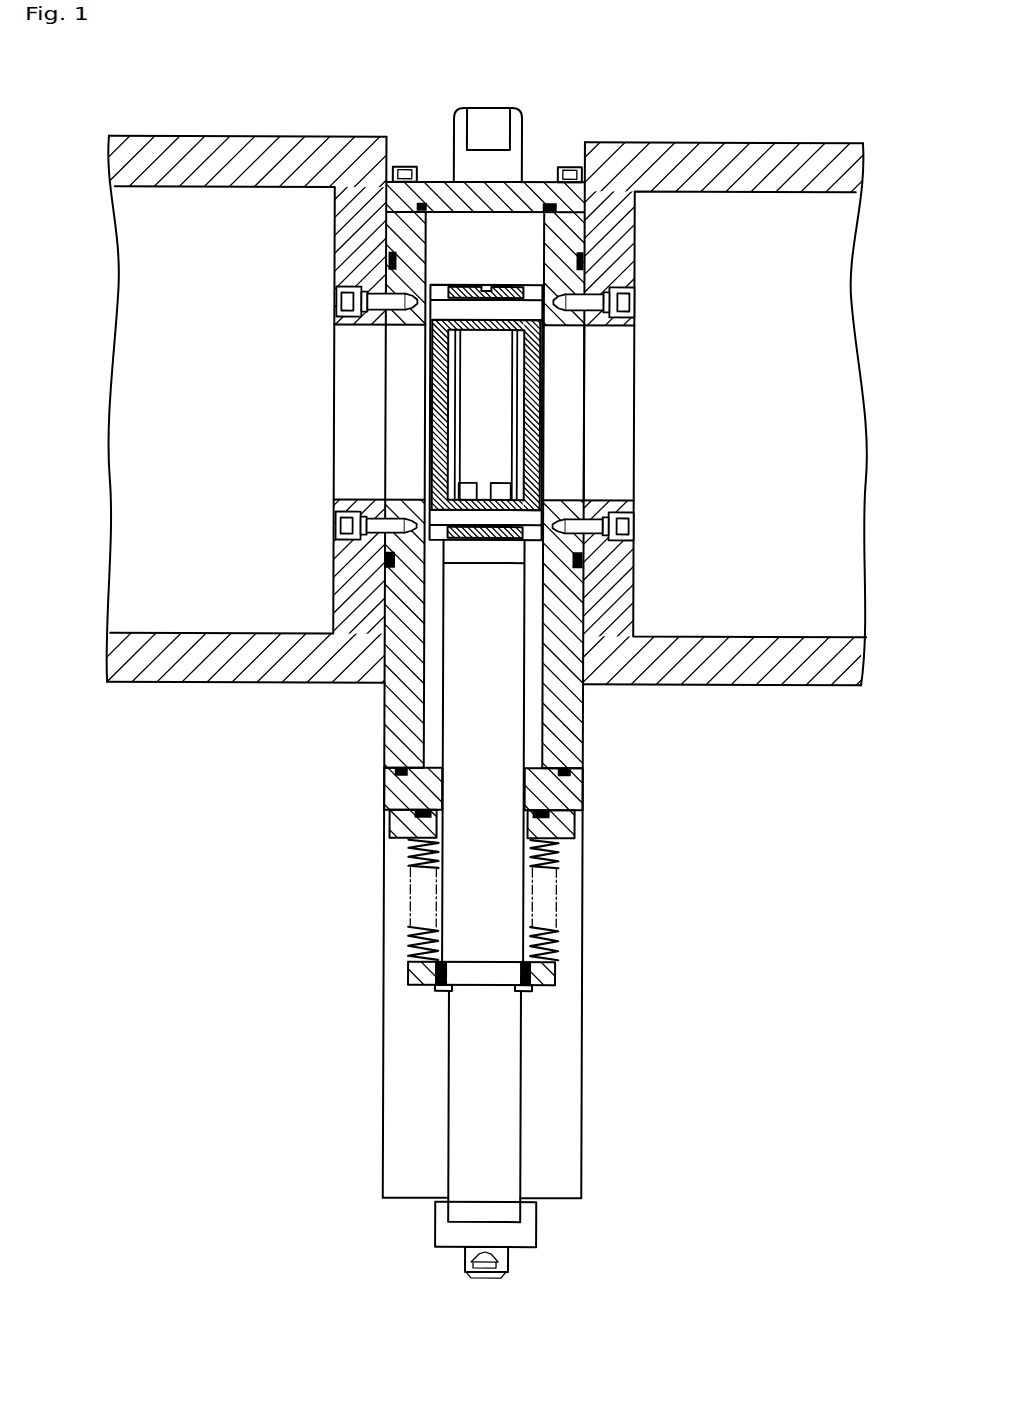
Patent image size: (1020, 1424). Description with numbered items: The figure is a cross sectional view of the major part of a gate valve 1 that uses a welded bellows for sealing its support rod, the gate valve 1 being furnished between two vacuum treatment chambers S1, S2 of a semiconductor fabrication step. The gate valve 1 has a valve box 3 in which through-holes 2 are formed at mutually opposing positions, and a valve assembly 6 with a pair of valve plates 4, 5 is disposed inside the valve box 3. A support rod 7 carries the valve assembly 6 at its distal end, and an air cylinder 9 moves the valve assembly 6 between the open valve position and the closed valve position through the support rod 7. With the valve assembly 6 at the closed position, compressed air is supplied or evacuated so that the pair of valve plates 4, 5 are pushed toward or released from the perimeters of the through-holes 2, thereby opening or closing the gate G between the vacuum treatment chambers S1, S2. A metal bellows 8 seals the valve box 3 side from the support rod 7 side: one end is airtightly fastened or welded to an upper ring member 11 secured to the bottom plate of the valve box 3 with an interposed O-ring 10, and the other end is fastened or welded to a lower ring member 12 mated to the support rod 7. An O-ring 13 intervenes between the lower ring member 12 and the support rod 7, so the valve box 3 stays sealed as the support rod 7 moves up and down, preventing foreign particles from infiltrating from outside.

The gate valve 1 is at (338, 860).
The through-holes 2 is at (420, 520).
The valve box 3 is at (363, 697).
The valve plate 4 is at (432, 372).
The valve plate 5 is at (541, 373).
The valve assembly 6 is at (517, 424).
The support rod 7 is at (472, 1073).
The bellows 8 is at (553, 927).
The air cylinder 9 is at (573, 1127).
The O-ring 10 is at (422, 813).
The upper ring member 11 is at (567, 852).
The lower ring member 12 is at (557, 978).
The O-ring 13 is at (506, 983).
The gate G is at (613, 341).
The vacuum treatment chamber S1 is at (227, 261).
The vacuum treatment chamber S2 is at (795, 267).